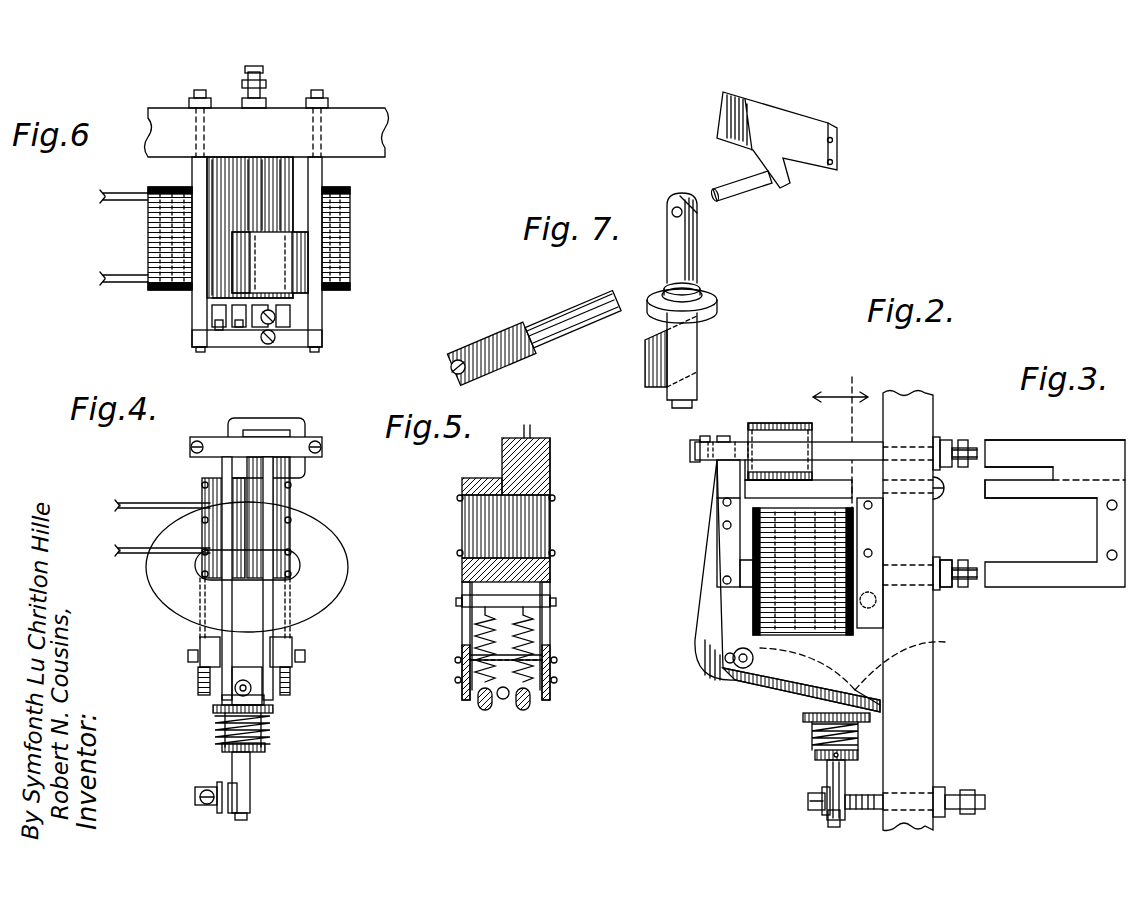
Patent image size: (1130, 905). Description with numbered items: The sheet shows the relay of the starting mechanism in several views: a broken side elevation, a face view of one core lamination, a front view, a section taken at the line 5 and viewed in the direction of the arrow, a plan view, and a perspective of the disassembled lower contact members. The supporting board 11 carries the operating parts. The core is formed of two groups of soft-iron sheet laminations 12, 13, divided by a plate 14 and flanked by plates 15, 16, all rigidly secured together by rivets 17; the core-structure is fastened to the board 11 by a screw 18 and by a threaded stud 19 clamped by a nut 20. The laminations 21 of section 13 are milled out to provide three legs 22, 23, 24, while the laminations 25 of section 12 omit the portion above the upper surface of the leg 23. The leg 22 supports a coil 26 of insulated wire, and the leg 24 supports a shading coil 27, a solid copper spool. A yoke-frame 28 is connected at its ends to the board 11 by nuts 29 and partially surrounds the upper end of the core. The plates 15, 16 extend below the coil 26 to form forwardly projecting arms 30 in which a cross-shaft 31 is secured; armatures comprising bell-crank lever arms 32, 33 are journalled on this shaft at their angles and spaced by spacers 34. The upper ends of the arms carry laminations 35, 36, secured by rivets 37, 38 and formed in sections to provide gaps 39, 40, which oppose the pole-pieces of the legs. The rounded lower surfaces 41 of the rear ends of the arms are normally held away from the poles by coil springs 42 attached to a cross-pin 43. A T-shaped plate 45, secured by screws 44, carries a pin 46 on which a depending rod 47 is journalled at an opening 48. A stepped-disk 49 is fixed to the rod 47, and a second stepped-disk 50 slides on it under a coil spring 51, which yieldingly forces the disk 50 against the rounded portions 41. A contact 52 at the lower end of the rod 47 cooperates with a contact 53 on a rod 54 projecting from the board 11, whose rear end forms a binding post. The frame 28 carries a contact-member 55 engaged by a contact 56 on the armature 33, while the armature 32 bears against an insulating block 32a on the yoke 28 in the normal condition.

In FIG. 2, the section line 5 is at (840, 488).
In FIG. 6, the supporting plate or board 11 is at (373, 128).
In FIG. 2, the supporting plate or board 11 is at (920, 422).
In FIG. 6, the core section of laminations 12 is at (228, 160).
In FIG. 5, the core section of laminations 12 is at (478, 480).
In FIG. 6, the core section of laminations 13 is at (273, 170).
In FIG. 5, the core section of laminations 13 is at (529, 416).
In FIG. 6, the plate 14 is at (250, 163).
In FIG. 5, the plate 14 is at (505, 462).
In FIG. 6, the plate 15 is at (293, 173).
In FIG. 5, the plate 15 is at (548, 465).
In FIG. 6, the plate 16 is at (210, 180).
In FIG. 5, the plate 16 is at (462, 532).
In FIG. 5, the rivets 17 is at (458, 500).
In FIG. 2, the screw 18 is at (940, 495).
In FIG. 2, the threaded stud 19 is at (945, 588).
In FIG. 2, the nut 20 is at (940, 562).
In FIG. 6, the laminations 21 is at (265, 167).
In FIG. 3, the laminations 21 is at (1089, 511).
In FIG. 2, the leg 22 is at (740, 590).
In FIG. 3, the leg 22 is at (1040, 580).
In FIG. 2, the leg 23 is at (755, 487).
In FIG. 3, the leg 23 is at (1018, 498).
In FIG. 2, the leg 24 is at (745, 440).
In FIG. 3, the leg 24 is at (1022, 455).
In FIG. 6, the laminations 25 is at (222, 270).
In FIG. 6, the coil 26 is at (348, 262).
In FIG. 4, the coil 26 is at (340, 555).
In FIG. 2, the coil 26 is at (760, 620).
In FIG. 6, the shading coil 27 is at (300, 260).
In FIG. 4, the shading coil 27 is at (275, 425).
In FIG. 2, the shading coil 27 is at (768, 423).
In FIG. 6, the yoke-frame 28 is at (318, 327).
In FIG. 4, the yoke-frame 28 is at (318, 437).
In FIG. 2, the yoke-frame 28 is at (828, 450).
In FIG. 6, the nuts 29 is at (192, 102).
In FIG. 4, the forwardly projecting arms 30 is at (283, 648).
In FIG. 2, the forwardly projecting arms 30 is at (770, 680).
In FIG. 4, the cross-shaft 31 is at (305, 655).
In FIG. 2, the cross-shaft 31 is at (727, 680).
In FIG. 4, the lever arm 32 is at (222, 608).
In FIG. 5, the lever arm 32 is at (485, 700).
In FIG. 6, the block of insulating material 32a is at (225, 327).
In FIG. 4, the lever arm 33 is at (273, 610).
In FIG. 5, the lever arm 33 is at (528, 700).
In FIG. 2, the lever arm 33 is at (700, 652).
In FIG. 4, the spacers 34 is at (210, 668).
In FIG. 2, the spacers 34 is at (740, 685).
In FIG. 4, the laminations 35 is at (215, 555).
In FIG. 4, the laminations 36 is at (270, 538).
In FIG. 2, the laminations 36 is at (727, 530).
In FIG. 4, the rivets 37 is at (207, 520).
In FIG. 2, the rivets 37 is at (723, 580).
In FIG. 4, the rivets 38 is at (290, 495).
In FIG. 2, the rivets 38 is at (722, 503).
In FIG. 4, the gap 39 is at (205, 532).
In FIG. 4, the gap 40 is at (300, 505).
In FIG. 2, the gap 40 is at (720, 525).
In FIG. 4, the rounded lower surfaces 41 is at (215, 710).
In FIG. 2, the rounded lower surfaces 41 is at (805, 705).
In FIG. 5, the coil springs 42 is at (478, 640).
In FIG. 2, the coil springs 42 is at (940, 645).
In FIG. 5, the cross-pin 43 is at (462, 600).
In FIG. 2, the cross-pin 43 is at (868, 605).
In FIG. 5, the screws 44 is at (458, 680).
In FIG. 7, the T-shaped plate 45 is at (820, 163).
In FIG. 4, the T-shaped plate 45 is at (225, 695).
In FIG. 5, the T-shaped plate 45 is at (548, 660).
In FIG. 7, the pin 46 is at (736, 190).
In FIG. 4, the pin 46 is at (252, 688).
In FIG. 5, the pin 46 is at (503, 700).
In FIG. 2, the pin 46 is at (820, 690).
In FIG. 7, the depending rod 47 is at (680, 253).
In FIG. 4, the depending rod 47 is at (250, 775).
In FIG. 2, the depending rod 47 is at (830, 773).
In FIG. 7, the opening 48 is at (672, 210).
In FIG. 7, the stepped-disk 49 is at (710, 295).
In FIG. 4, the stepped-disk 49 is at (225, 748).
In FIG. 2, the stepped-disk 49 is at (858, 755).
In FIG. 4, the stepped-disk 50 is at (225, 712).
In FIG. 2, the stepped-disk 50 is at (870, 716).
In FIG. 4, the coil spring 51 is at (265, 745).
In FIG. 2, the coil spring 51 is at (860, 735).
In FIG. 7, the contact 52 is at (650, 350).
In FIG. 4, the contact 52 is at (245, 810).
In FIG. 2, the contact 52 is at (828, 815).
In FIG. 7, the contact 53 is at (520, 352).
In FIG. 4, the contact 53 is at (215, 810).
In FIG. 2, the contact 53 is at (808, 800).
In FIG. 7, the rod 54 is at (585, 305).
In FIG. 2, the rod 54 is at (862, 803).
In FIG. 6, the contact-member 55 is at (263, 332).
In FIG. 2, the contact-member 55 is at (710, 465).
In FIG. 6, the contact 56 is at (275, 322).
In FIG. 2, the contact 56 is at (712, 472).